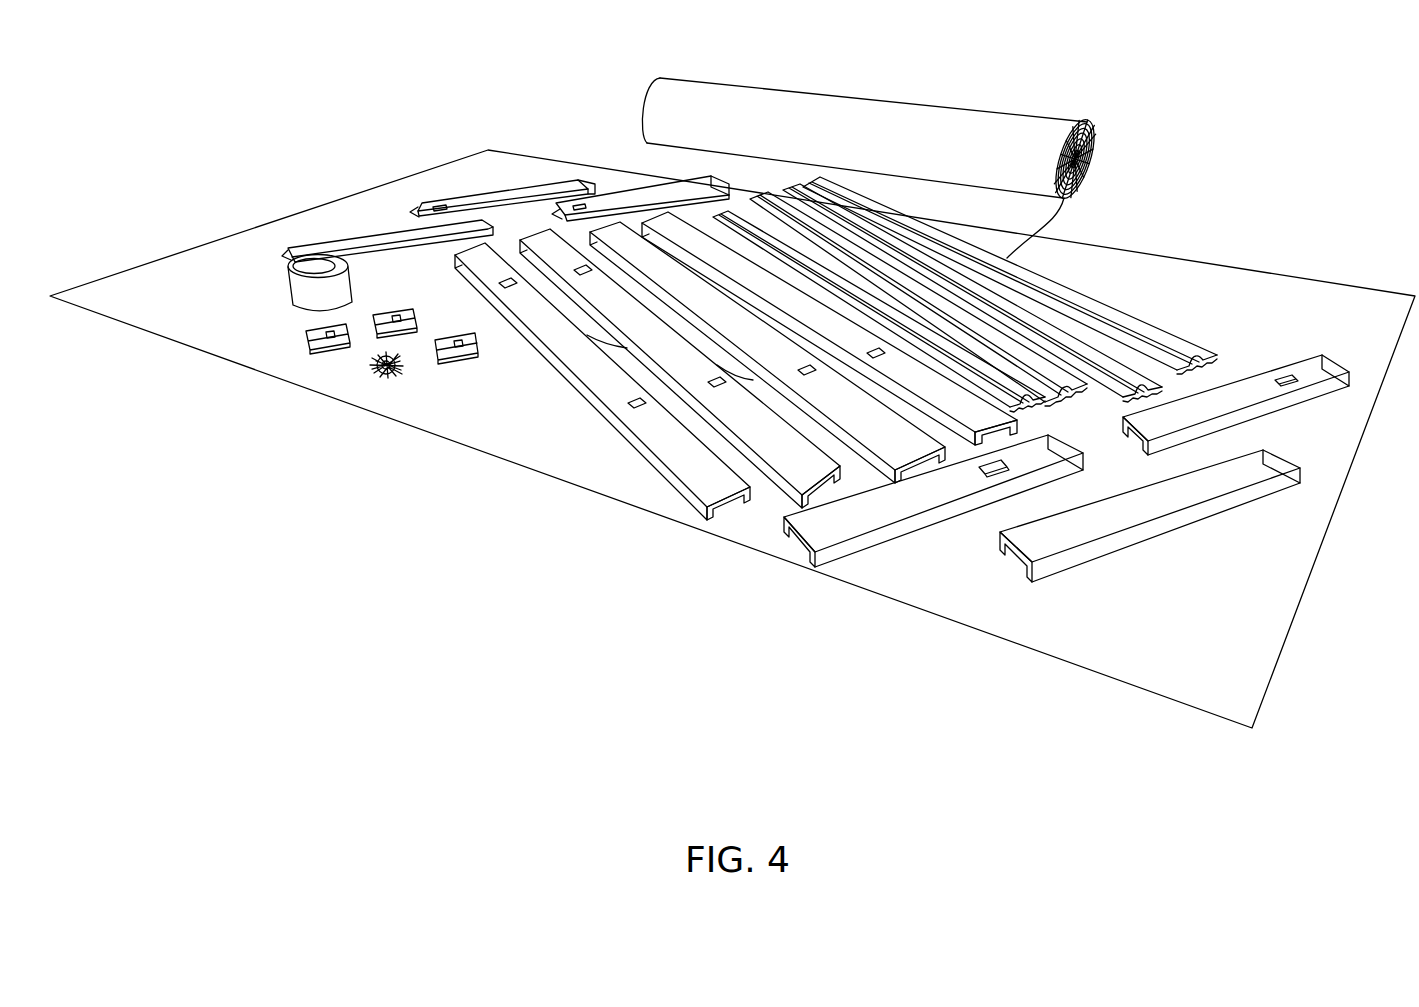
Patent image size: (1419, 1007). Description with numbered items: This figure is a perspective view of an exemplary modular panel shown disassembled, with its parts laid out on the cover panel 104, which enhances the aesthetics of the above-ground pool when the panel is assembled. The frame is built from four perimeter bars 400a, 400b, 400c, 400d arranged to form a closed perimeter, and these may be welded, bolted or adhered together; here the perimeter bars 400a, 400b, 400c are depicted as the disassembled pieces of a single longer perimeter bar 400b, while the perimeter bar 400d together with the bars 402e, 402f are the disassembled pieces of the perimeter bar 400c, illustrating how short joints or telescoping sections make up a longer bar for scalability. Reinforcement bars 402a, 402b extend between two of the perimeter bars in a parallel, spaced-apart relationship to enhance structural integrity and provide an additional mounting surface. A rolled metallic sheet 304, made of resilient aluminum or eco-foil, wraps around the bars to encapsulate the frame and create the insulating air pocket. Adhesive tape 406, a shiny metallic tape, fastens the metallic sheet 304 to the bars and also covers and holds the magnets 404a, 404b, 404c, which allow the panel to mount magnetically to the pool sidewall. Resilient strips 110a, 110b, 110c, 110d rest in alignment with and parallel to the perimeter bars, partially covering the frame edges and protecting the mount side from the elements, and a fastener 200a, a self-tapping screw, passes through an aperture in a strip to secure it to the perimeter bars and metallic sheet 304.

The cover panel 104 is at (545, 411).
The metallic sheet 304 is at (773, 98).
The perimeter bar 400a is at (638, 200).
The perimeter bar 400b is at (533, 193).
The perimeter bar 400c is at (378, 234).
The perimeter bar 400d is at (685, 230).
The reinforcement bar 402a is at (788, 477).
The reinforcement bar 402b is at (877, 453).
The bar 402e is at (1117, 539).
The bar 402f is at (1321, 395).
The resilient strip 110a is at (1021, 400).
The resilient strip 110b is at (1025, 362).
The resilient strip 110c is at (1118, 363).
The resilient strip 110d is at (1192, 347).
The magnet 404a is at (308, 345).
The magnet 404b is at (377, 330).
The magnet 404c is at (452, 357).
The adhesive tape 406 is at (302, 285).
The fastener 200a is at (383, 377).